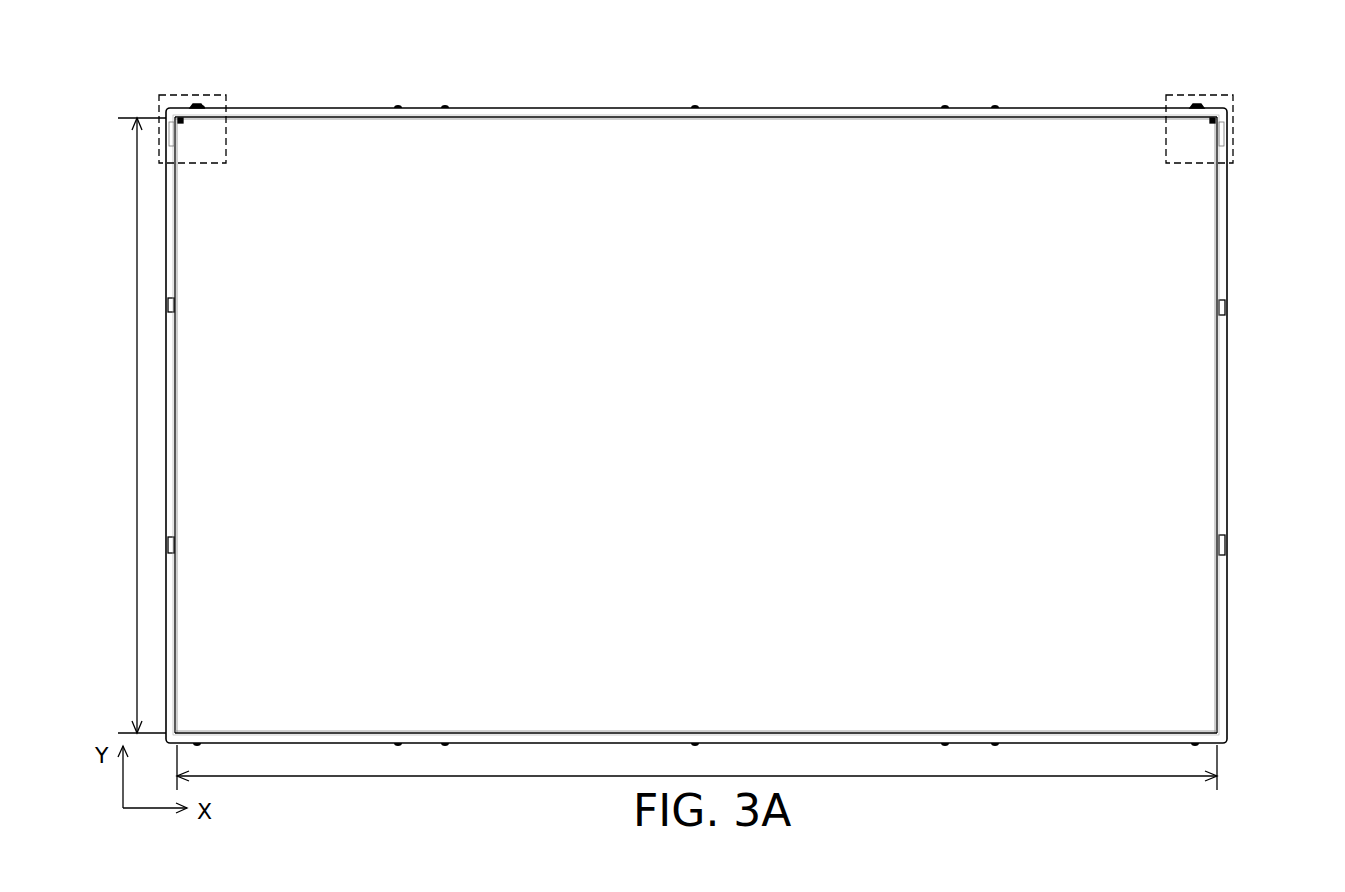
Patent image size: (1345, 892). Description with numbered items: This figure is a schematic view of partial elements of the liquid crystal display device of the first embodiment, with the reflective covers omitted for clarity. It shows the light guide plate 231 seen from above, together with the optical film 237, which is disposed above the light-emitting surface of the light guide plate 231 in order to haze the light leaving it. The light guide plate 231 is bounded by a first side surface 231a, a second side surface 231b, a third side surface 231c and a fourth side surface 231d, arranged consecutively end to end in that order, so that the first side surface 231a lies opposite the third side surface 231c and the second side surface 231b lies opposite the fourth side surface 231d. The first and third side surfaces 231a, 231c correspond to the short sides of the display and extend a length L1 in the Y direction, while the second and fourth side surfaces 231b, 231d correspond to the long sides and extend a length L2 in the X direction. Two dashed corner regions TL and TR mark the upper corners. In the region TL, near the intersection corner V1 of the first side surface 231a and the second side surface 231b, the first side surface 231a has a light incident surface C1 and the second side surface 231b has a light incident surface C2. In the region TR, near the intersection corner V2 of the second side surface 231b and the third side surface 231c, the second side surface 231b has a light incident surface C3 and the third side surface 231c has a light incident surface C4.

The light guide plate 231 is at (696, 393).
The first side surface 231a is at (177, 490).
The second side surface 231b is at (583, 119).
The third side surface 231c is at (1217, 350).
The fourth side surface 231d is at (907, 733).
The optical film 237 is at (1192, 628).
The top-left corner region TL is at (218, 85).
The top-right corner region TR is at (1175, 85).
The light incident surface C1 is at (176, 142).
The light incident surface C2 is at (196, 104).
The light incident surface C3 is at (1197, 104).
The light incident surface C4 is at (1217, 142).
The intersection corner V1 is at (183, 121).
The intersection corner V2 is at (1212, 121).
The length L1 is at (131, 425).
The length L2 is at (697, 767).